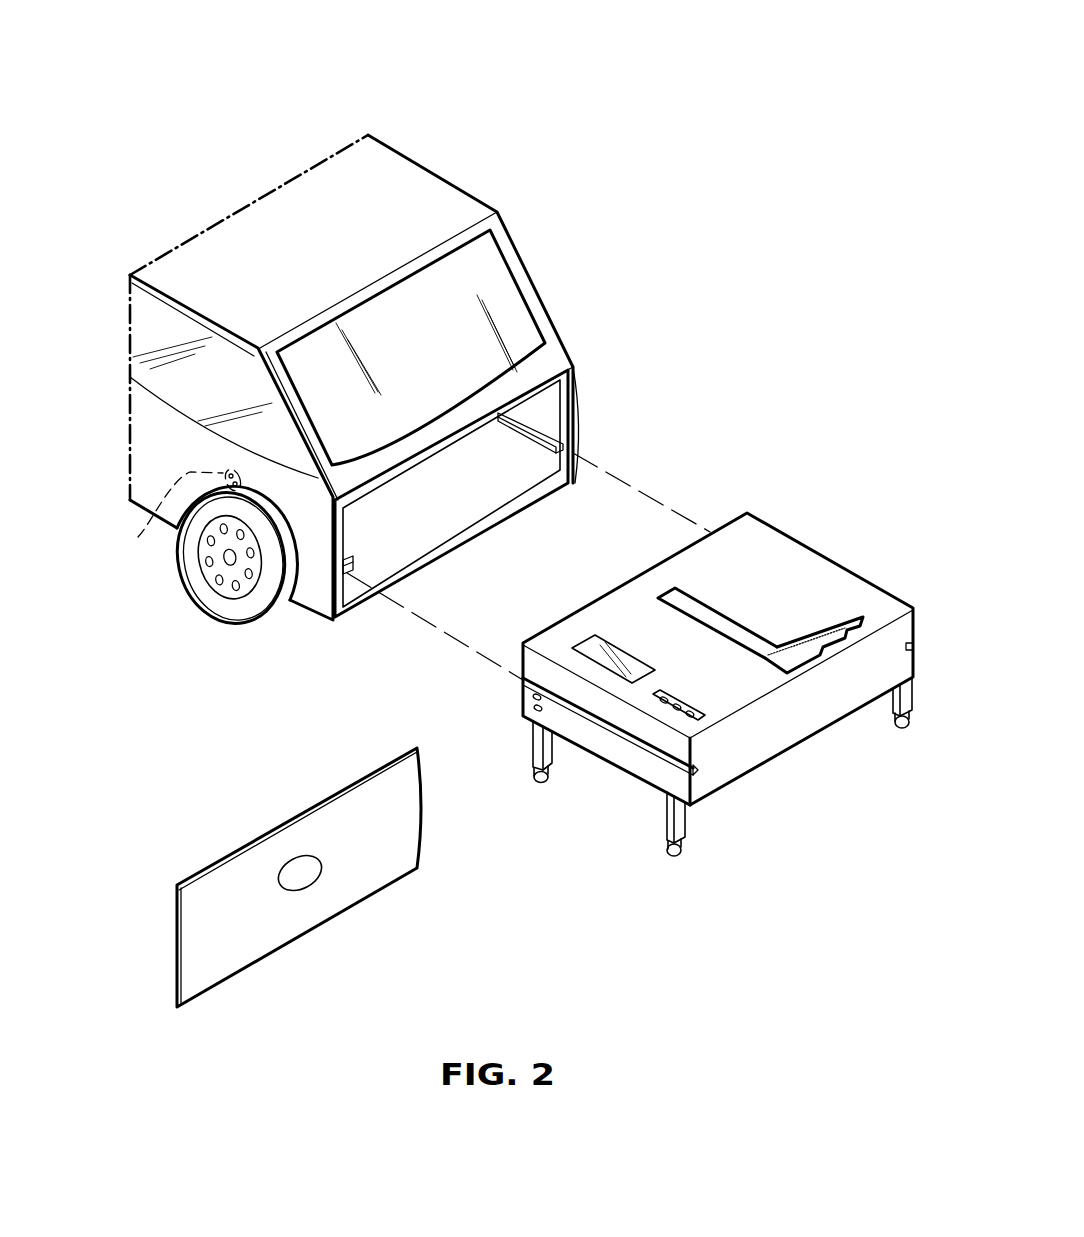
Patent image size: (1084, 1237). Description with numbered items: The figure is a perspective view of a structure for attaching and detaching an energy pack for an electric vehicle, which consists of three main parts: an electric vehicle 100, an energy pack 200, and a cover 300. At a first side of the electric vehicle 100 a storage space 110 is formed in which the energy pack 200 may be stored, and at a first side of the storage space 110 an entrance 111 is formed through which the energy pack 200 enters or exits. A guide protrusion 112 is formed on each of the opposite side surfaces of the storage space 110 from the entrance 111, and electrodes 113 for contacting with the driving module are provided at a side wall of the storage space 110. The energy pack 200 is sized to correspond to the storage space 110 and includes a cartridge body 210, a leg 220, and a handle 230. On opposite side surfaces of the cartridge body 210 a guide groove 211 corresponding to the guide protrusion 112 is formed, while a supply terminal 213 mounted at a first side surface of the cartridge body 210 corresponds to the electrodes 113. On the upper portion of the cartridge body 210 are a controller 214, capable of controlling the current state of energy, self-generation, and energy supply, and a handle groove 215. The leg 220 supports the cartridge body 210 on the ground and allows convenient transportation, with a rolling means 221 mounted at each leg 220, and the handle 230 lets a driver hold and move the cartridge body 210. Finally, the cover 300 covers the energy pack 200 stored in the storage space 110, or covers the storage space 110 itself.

The electric vehicle 100 is at (460, 167).
The storage space 110 is at (484, 492).
The entrance 111 is at (346, 538).
The guide protrusion 112 is at (535, 425).
The electrodes 113 is at (138, 537).
The energy pack 200 is at (810, 518).
The cartridge body 210 is at (862, 590).
The guide groove 211 is at (632, 742).
The supply terminal 213 is at (536, 702).
The controller 214 is at (703, 718).
The handle groove 215 is at (700, 607).
The leg 220 is at (683, 823).
The rolling means 221 is at (672, 857).
The handle 230 is at (820, 648).
The cover 300 is at (425, 870).